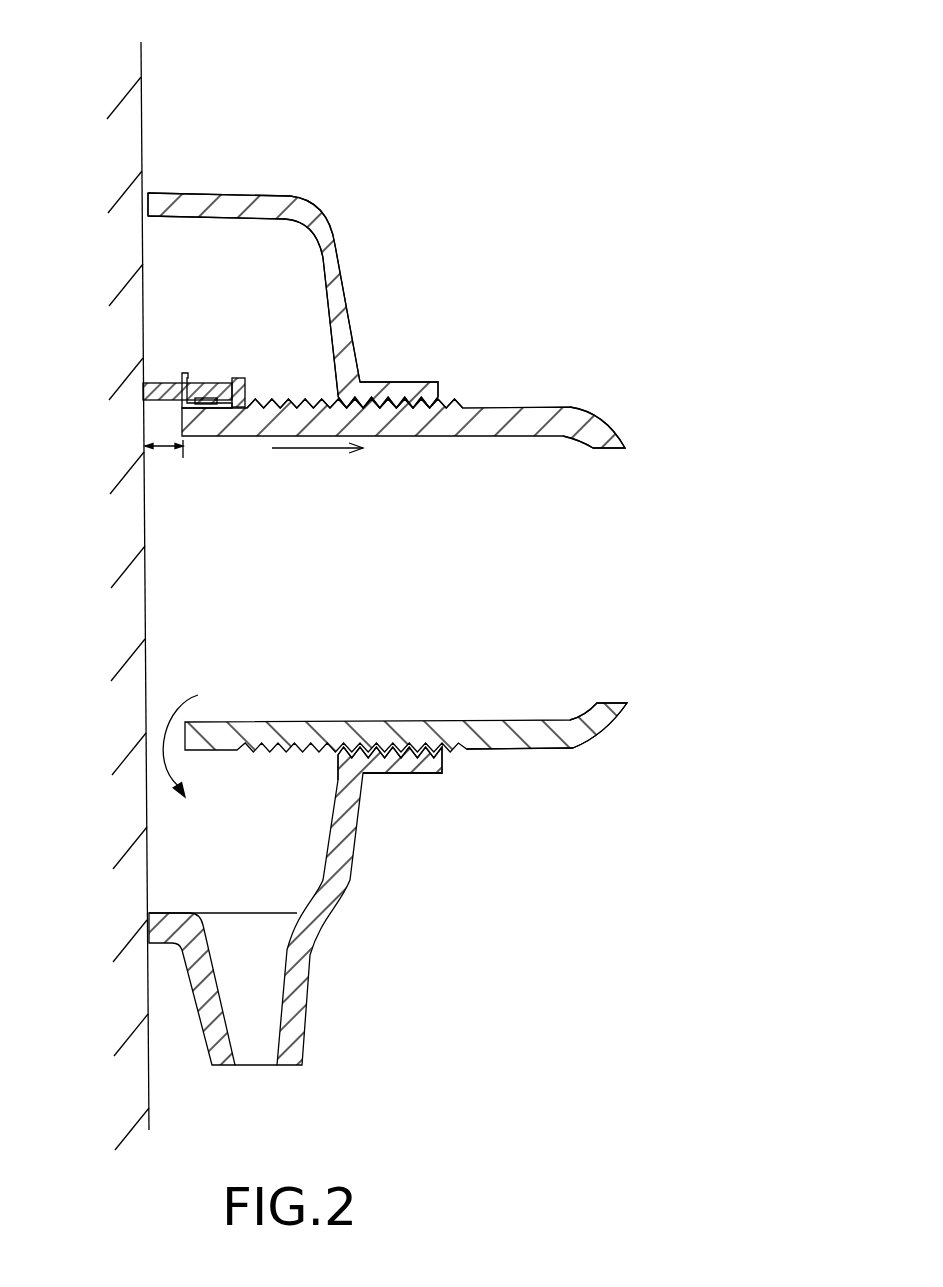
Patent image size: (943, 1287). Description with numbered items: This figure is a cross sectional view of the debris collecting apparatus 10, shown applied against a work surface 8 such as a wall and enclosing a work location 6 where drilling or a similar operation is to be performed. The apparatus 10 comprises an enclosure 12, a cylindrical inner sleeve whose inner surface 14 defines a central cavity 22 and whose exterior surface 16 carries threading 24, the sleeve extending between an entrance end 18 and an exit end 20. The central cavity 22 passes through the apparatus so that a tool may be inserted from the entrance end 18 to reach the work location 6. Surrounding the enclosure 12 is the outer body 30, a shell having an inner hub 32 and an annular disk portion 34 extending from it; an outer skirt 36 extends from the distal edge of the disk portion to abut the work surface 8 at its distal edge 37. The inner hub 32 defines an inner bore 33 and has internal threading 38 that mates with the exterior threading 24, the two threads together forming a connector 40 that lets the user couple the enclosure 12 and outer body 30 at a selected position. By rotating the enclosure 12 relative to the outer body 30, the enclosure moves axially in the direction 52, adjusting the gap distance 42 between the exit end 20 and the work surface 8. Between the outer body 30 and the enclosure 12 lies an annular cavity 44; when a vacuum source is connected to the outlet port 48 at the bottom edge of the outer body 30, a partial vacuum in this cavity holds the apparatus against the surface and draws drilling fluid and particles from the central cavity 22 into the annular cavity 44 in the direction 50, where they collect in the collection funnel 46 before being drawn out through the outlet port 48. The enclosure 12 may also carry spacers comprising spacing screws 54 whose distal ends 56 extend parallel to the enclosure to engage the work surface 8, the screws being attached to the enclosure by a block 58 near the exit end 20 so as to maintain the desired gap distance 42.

The work location 6 is at (150, 582).
The work surface 8 is at (141, 92).
The apparatus for collecting debris 10 is at (492, 228).
The enclosure 12 is at (573, 737).
The inner surface 14 is at (540, 720).
The exterior surface 16 is at (538, 750).
The entrance end 18 is at (612, 408).
The exit end 20 is at (193, 430).
The central cavity 22 is at (625, 580).
The threading 24 is at (443, 750).
The outer body 30 is at (310, 202).
The inner hub 32 is at (403, 385).
The inner bore 33 is at (441, 401).
The annular disk portion 34 is at (352, 312).
The outer skirt 36 is at (230, 207).
The distal edge 37 is at (148, 205).
The internal threading 38 is at (376, 380).
The connector 40 is at (407, 797).
The gap distance 42 is at (165, 447).
The annular cavity 44 is at (236, 347).
The collection funnel 46 is at (333, 916).
The outlet port 48 is at (290, 1067).
The direction of debris flow 50 is at (162, 745).
The axial movement direction 52 is at (313, 448).
The spacing screw 54 is at (186, 380).
The distal end 56 is at (133, 386).
The block 58 is at (183, 370).